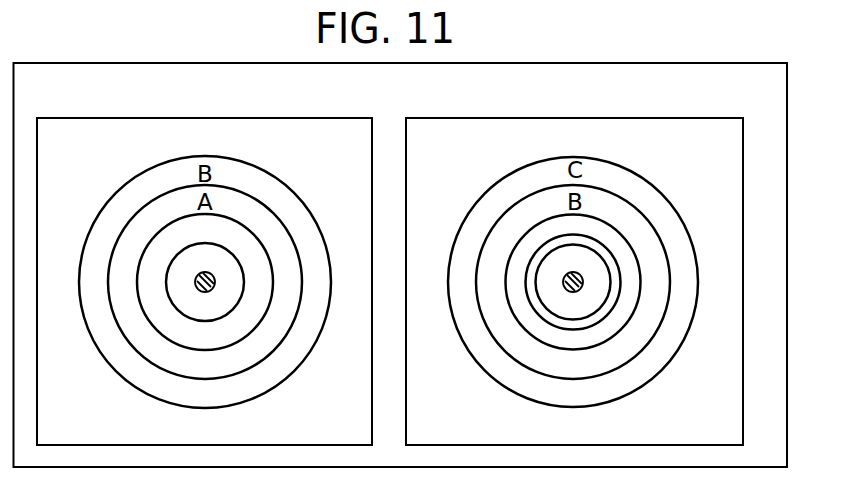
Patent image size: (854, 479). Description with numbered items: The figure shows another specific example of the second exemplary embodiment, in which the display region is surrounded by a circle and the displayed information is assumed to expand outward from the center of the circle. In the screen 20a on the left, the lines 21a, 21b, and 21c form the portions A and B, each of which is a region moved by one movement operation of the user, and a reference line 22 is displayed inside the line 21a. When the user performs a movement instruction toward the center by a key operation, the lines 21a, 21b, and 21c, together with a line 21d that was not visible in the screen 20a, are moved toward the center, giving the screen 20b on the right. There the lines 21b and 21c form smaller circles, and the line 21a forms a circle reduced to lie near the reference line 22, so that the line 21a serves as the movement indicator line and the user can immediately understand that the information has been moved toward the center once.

The screen 20a is at (327, 118).
The screen 20b is at (703, 118).
The line 21a is at (257, 322).
The line 21b is at (300, 257).
The line 21c is at (298, 193).
The line 21d is at (667, 193).
The reference line 22 is at (172, 300).